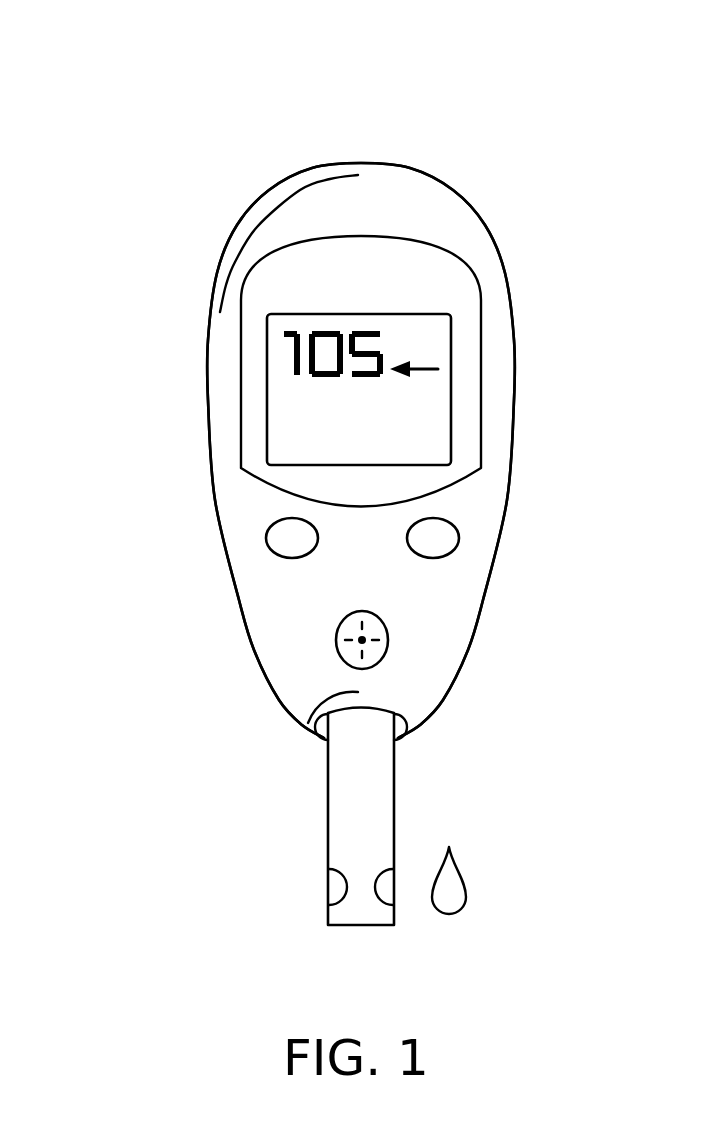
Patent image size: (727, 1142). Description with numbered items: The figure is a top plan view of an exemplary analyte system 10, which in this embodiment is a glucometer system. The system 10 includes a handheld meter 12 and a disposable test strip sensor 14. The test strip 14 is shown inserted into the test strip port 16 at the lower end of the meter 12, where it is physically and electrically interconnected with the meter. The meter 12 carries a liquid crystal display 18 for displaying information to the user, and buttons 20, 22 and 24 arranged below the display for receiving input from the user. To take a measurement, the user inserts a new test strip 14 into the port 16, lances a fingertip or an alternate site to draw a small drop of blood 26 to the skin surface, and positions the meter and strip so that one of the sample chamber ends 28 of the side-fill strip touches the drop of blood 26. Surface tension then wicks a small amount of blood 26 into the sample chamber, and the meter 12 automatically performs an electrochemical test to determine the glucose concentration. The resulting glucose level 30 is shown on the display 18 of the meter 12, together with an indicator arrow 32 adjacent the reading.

The analyte system 10 is at (153, 133).
The handheld meter 12 is at (432, 198).
The test strip sensor 14 is at (350, 797).
The test strip port 16 is at (404, 722).
The liquid crystal display 18 is at (280, 413).
The button 20 is at (265, 525).
The button 22 is at (458, 523).
The button 24 is at (337, 632).
The drop of blood 26 is at (465, 888).
The sample chamber ends 28 is at (387, 892).
The glucose level 30 is at (288, 355).
The trend indicator arrow 32 is at (428, 378).